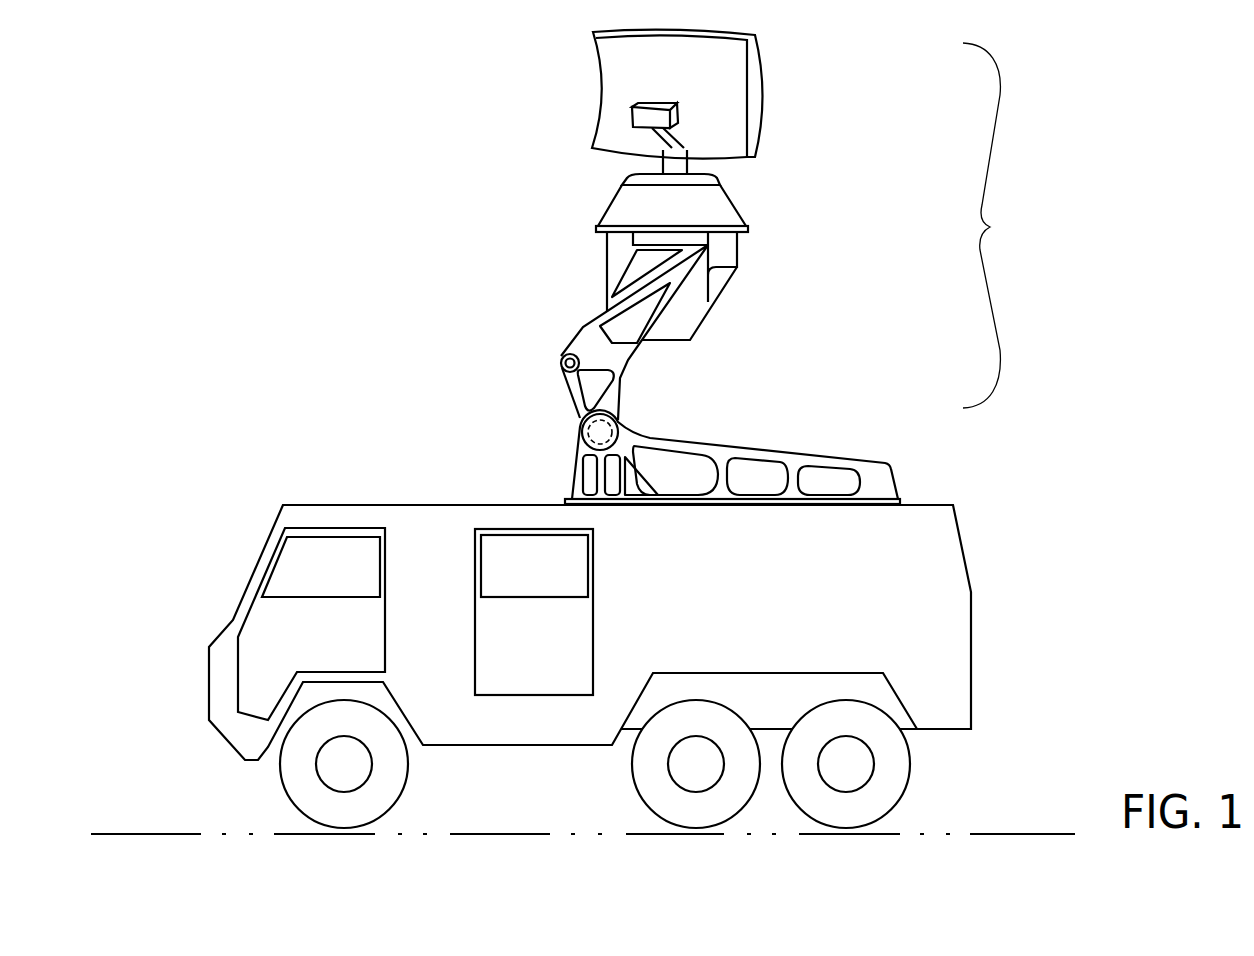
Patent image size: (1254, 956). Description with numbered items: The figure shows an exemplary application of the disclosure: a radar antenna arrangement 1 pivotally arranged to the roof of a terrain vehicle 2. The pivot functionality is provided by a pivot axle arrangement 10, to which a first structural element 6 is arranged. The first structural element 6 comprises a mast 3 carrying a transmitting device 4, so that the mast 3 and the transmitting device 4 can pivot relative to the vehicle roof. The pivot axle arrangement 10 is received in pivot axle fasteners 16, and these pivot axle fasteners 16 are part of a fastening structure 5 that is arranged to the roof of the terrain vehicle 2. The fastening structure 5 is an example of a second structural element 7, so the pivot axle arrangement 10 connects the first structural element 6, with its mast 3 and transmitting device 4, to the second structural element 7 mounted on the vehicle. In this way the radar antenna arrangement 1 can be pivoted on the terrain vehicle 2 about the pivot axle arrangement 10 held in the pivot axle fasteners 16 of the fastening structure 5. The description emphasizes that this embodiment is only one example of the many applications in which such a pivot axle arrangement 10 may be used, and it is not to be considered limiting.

The radar antenna arrangement 1 is at (440, 205).
The terrain vehicle 2 is at (352, 462).
The mast 3 is at (768, 258).
The transmitting device 4 is at (805, 70).
The fastening structure 5 is at (935, 462).
The first structural element 6 is at (992, 230).
The second structural element 7 is at (732, 501).
The pivot axle arrangement 10 is at (655, 423).
The pivot axle fasteners 16 is at (572, 425).